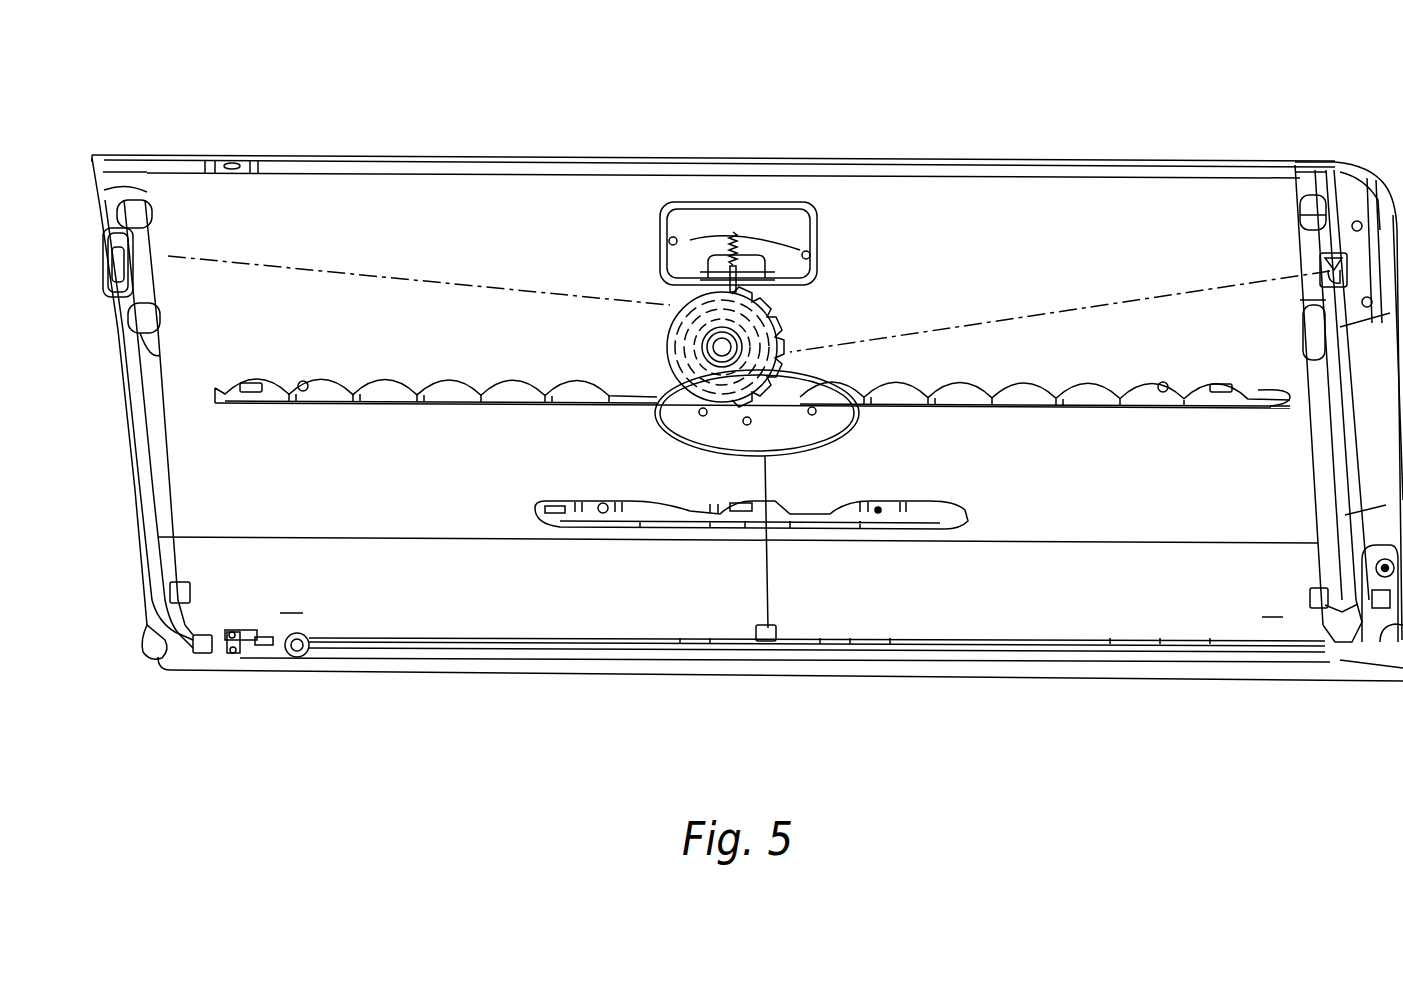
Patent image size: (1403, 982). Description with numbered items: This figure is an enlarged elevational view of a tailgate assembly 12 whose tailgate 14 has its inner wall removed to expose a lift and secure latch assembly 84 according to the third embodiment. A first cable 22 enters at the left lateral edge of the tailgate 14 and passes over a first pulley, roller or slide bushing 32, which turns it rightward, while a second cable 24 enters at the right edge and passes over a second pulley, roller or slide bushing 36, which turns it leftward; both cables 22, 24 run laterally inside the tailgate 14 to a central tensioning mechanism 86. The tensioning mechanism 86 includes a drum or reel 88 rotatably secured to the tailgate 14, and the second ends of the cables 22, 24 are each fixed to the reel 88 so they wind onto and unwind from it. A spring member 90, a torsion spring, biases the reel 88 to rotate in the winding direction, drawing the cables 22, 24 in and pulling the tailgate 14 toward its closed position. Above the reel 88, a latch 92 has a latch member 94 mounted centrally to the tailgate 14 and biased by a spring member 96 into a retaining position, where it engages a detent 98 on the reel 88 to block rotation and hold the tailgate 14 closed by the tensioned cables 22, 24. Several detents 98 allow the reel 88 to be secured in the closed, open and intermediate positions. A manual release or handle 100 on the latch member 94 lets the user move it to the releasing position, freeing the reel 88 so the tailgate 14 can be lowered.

The tailgate assembly 12 is at (1030, 155).
The tailgate 14 is at (965, 158).
The first support member or cable 22 is at (385, 278).
The second support member or cable 24 is at (1158, 297).
The first pulley, roller or slide bushing 32 is at (158, 268).
The second pulley, roller or slide bushing 36 is at (1332, 268).
The lift and secure latch assembly 84 is at (575, 237).
The tensioning mechanism 86 is at (655, 343).
The drum or reel 88 is at (672, 322).
The spring member 90 is at (663, 385).
The latch 92 is at (812, 223).
The latch member 94 is at (800, 270).
The spring member 96 is at (730, 240).
The detent 98 is at (916, 297).
The manual release or handle 100 is at (778, 220).